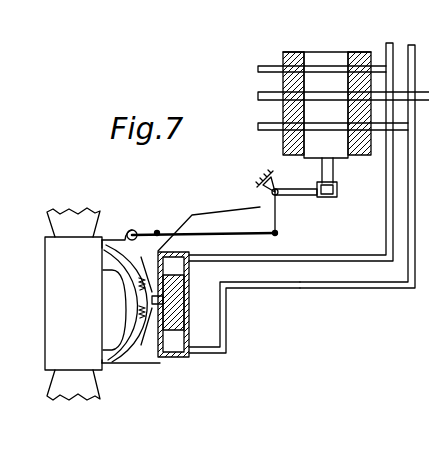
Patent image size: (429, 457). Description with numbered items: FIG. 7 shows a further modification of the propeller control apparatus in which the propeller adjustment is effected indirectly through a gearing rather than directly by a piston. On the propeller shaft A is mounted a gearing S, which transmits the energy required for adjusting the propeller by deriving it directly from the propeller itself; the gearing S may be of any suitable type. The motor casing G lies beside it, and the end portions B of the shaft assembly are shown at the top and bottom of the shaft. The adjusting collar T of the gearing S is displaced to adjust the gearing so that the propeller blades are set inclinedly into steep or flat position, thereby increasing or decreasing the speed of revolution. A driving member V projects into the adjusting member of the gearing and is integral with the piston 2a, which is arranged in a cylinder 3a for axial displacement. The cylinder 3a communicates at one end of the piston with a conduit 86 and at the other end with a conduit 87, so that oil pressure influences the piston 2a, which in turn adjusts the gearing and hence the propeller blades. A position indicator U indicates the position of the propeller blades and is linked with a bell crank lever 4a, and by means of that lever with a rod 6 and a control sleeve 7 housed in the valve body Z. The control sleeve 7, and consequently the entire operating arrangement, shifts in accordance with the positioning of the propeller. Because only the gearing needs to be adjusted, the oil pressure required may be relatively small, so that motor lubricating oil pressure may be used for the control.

The propeller shaft A is at (50, 268).
The end fork / support B is at (77, 219).
The position indicator U is at (147, 236).
The driving member V is at (152, 299).
The gearing S is at (118, 353).
The adjusting collar T is at (146, 347).
The motor casing G is at (170, 358).
The piston 2a is at (187, 287).
The cylinder 3a is at (190, 338).
The conduit 86 is at (375, 242).
The conduit 87 is at (408, 288).
The control valve body Z is at (289, 57).
The control sleeve 7 is at (340, 148).
The rod 6 is at (322, 172).
The bell crank lever 4a is at (303, 197).